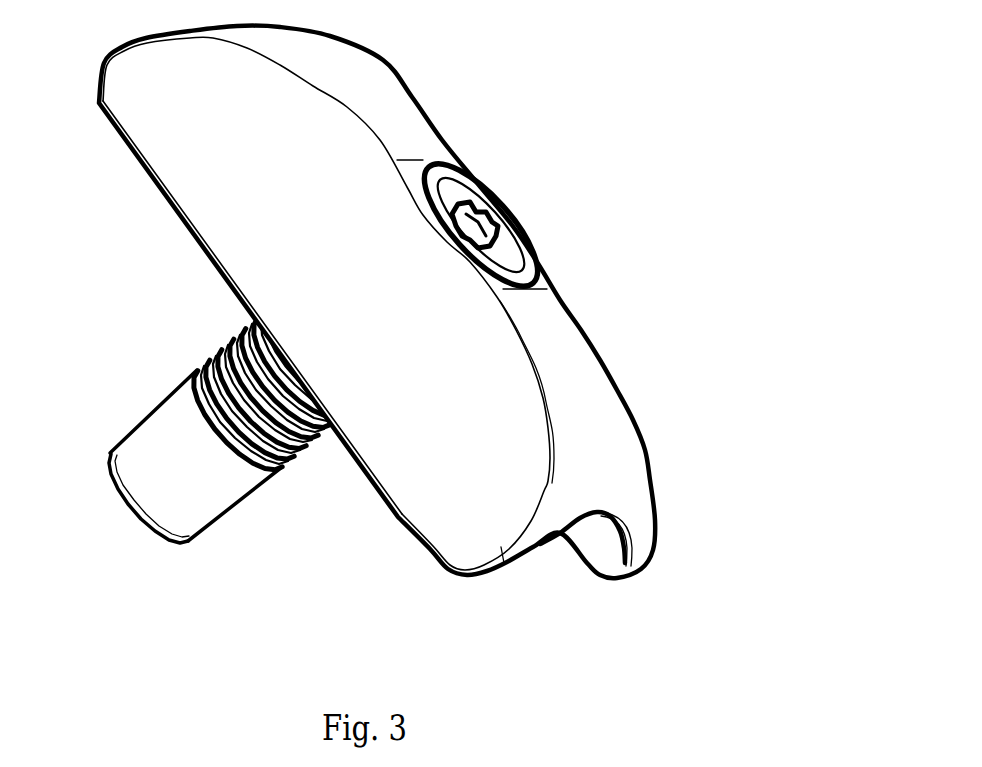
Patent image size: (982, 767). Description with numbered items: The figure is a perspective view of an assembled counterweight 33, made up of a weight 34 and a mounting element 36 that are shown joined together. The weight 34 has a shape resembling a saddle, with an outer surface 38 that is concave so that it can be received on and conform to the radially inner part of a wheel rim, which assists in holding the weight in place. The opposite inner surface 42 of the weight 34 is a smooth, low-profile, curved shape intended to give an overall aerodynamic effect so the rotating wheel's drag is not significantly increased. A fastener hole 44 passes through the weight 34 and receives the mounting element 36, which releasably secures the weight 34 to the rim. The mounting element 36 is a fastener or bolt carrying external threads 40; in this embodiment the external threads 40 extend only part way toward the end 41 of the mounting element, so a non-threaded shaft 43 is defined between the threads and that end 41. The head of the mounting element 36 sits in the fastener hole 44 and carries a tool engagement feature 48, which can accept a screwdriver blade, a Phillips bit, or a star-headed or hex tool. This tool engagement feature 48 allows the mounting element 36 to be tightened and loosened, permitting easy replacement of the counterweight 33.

The counterweight 33 is at (640, 568).
The weight 34 is at (632, 470).
The mounting element 36 is at (475, 177).
The outer surface 38 is at (597, 545).
The external threads 40 is at (307, 462).
The end 41 is at (178, 550).
The inner surface 42 is at (557, 335).
The non-threaded shaft 43 is at (202, 522).
The fastener hole 44 is at (555, 275).
The tool engagement feature 48 is at (506, 214).